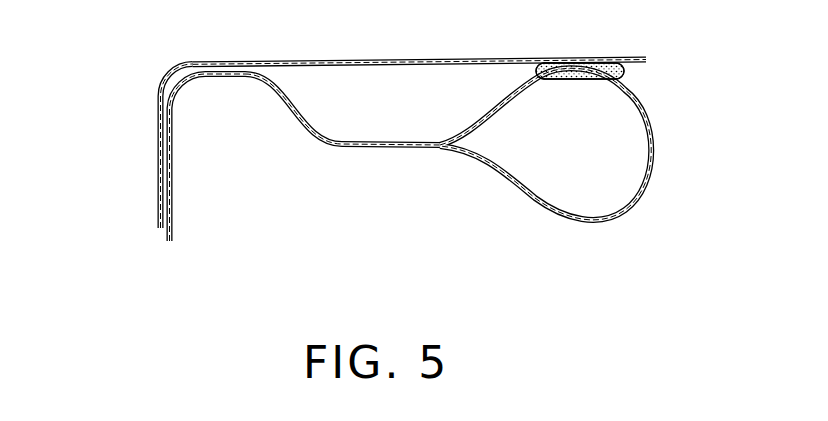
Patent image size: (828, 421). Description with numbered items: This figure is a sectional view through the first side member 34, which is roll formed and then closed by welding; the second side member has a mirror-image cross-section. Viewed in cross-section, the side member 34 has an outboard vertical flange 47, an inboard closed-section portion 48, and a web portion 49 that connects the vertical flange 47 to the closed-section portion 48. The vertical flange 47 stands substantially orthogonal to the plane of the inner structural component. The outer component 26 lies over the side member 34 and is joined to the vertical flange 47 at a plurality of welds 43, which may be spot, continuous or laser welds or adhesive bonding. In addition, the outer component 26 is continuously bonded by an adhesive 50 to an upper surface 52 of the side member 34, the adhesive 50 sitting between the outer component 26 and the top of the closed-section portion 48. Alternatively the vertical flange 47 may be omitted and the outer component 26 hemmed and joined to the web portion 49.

The outer component 26 is at (373, 60).
The first side member 34 is at (599, 166).
The welds 43 is at (163, 154).
The outboard vertical flange 47 is at (176, 162).
The inboard closed-section portion 48 is at (652, 150).
The web portion 49 is at (334, 148).
The adhesive 50 is at (538, 72).
The upper surface 52 is at (625, 73).